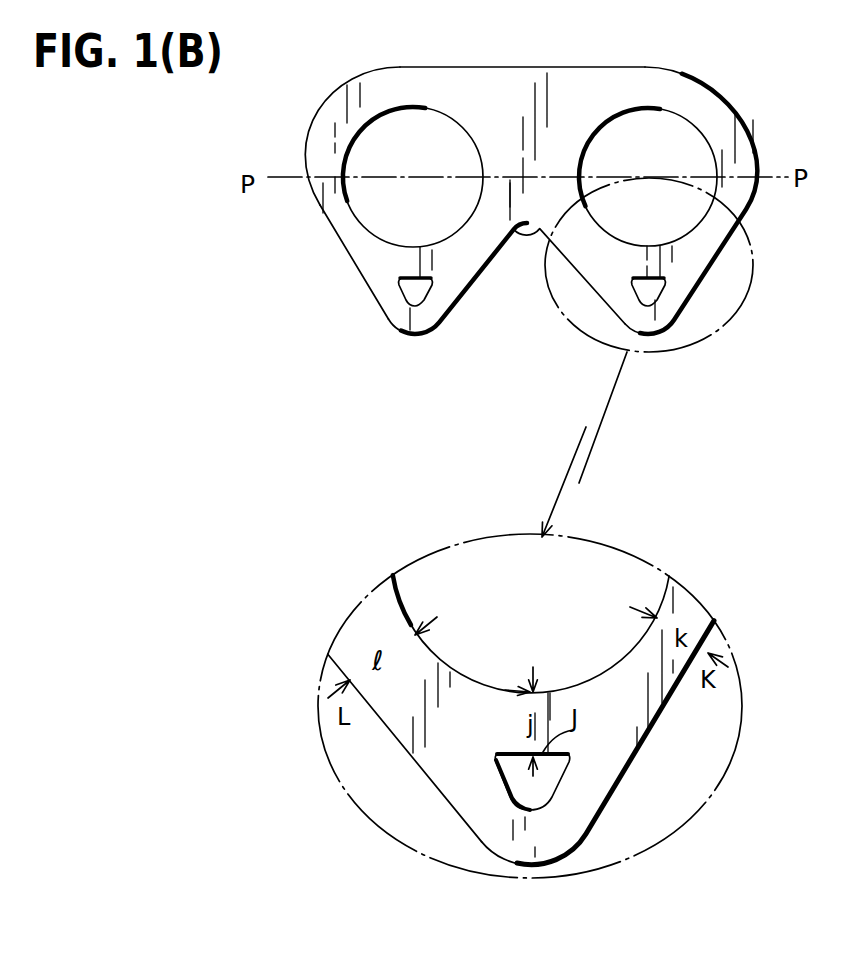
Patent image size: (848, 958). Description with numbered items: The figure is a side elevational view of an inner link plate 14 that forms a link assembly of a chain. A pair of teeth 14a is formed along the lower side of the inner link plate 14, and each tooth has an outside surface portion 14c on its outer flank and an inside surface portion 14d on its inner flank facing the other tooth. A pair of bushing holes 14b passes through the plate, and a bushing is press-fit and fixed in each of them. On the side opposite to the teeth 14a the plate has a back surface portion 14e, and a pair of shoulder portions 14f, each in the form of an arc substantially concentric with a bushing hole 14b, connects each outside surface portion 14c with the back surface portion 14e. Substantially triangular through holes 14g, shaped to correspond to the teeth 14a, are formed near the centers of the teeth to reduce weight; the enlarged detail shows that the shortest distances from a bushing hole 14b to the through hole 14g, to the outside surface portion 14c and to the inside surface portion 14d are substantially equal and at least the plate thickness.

The inner link plate 14 is at (543, 100).
The teeth 14a is at (410, 328).
The bushing holes 14b is at (363, 155).
The outside surface portion 14c is at (360, 287).
The inside surface portion 14d is at (473, 283).
The back surface portion 14e is at (508, 67).
The shoulder portions 14f is at (740, 118).
The through holes 14g is at (652, 297).